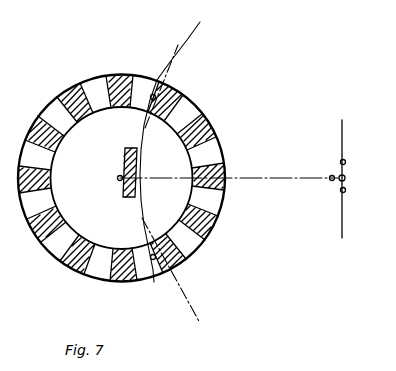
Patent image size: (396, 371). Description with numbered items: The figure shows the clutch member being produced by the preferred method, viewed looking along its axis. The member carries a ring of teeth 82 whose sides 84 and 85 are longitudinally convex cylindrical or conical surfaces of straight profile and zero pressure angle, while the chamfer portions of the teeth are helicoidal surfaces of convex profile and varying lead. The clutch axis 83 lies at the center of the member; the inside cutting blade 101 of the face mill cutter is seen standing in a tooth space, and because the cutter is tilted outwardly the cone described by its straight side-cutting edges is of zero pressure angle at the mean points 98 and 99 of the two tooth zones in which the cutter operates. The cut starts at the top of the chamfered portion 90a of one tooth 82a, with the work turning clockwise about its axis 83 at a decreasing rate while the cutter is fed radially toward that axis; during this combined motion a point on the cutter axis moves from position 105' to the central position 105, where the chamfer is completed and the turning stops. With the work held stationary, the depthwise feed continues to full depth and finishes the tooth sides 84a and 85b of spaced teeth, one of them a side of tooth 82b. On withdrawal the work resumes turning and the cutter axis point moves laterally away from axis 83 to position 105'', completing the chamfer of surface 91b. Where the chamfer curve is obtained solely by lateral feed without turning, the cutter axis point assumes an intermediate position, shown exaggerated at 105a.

The teeth 82 is at (57, 143).
The tooth 82a is at (161, 159).
The ring segment 82b is at (161, 207).
The clutch axis 83 is at (118, 180).
The tooth side 84 is at (92, 258).
The tooth side 84a is at (144, 90).
The tooth side 85 is at (57, 248).
The tooth side 85b is at (151, 256).
The chamfered portion 90a is at (168, 88).
The chamfer surface 91b is at (160, 265).
The mean point 98 is at (153, 94).
The mean point 99 is at (153, 283).
The inside cutting blade 101 is at (125, 156).
The central position of cutter axis point 105 is at (363, 179).
The intermediate position of cutter axis point 105a is at (331, 180).
The starting position of cutter axis point 105' is at (366, 210).
The end position of cutter axis point 105'' is at (367, 150).